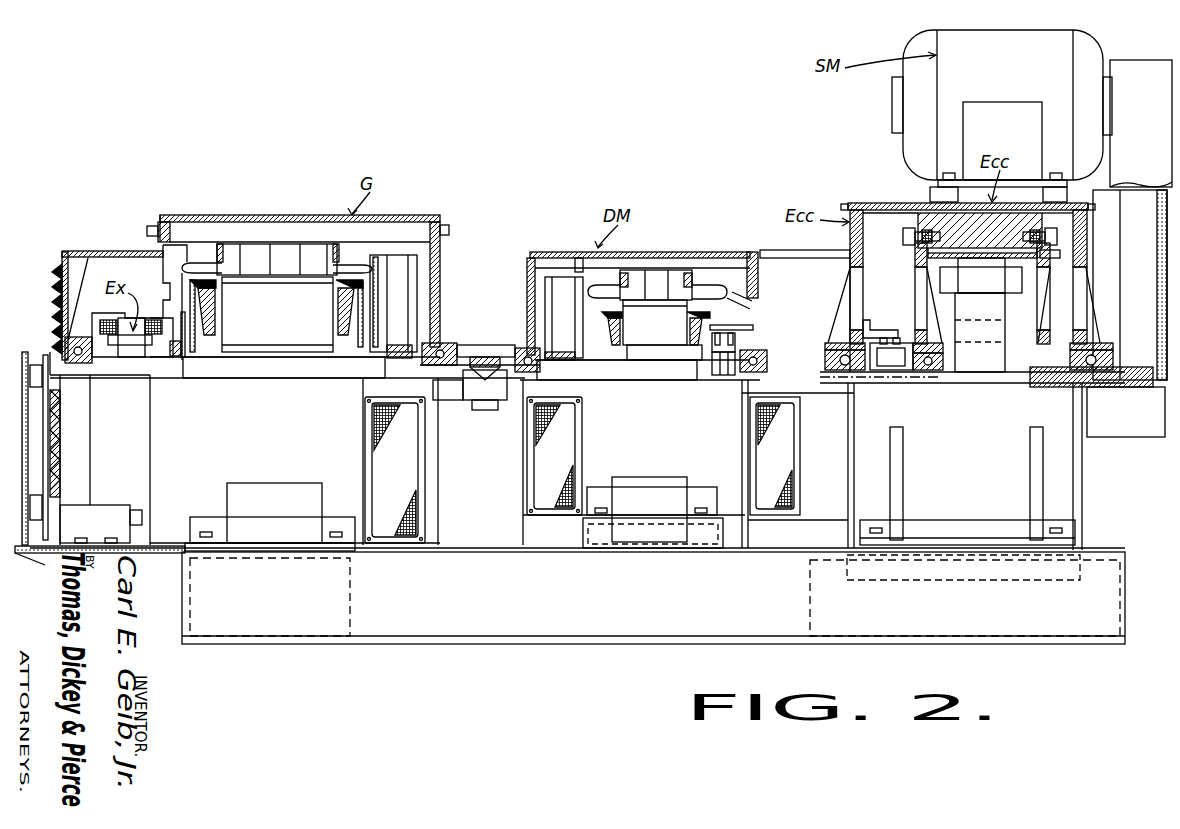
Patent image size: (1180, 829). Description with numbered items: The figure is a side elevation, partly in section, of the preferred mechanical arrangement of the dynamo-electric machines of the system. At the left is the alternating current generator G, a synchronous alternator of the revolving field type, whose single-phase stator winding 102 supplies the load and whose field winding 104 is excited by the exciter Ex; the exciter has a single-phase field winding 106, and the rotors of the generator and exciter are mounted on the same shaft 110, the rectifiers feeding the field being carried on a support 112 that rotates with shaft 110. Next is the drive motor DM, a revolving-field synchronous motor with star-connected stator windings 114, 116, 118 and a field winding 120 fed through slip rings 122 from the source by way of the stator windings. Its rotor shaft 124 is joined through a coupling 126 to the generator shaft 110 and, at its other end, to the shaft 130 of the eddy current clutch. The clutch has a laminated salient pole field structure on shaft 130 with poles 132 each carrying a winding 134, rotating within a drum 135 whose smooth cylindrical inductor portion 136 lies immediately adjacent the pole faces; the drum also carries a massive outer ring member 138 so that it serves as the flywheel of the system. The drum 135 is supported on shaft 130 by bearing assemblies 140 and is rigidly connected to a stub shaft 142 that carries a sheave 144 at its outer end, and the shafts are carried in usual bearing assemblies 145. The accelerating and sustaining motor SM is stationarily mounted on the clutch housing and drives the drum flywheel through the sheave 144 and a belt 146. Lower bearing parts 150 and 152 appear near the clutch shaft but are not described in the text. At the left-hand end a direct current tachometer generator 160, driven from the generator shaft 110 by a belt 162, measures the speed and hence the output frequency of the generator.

The single-phase stator winding 102 is at (188, 268).
The field winding 104 is at (212, 326).
The single-phase field winding 106 is at (112, 300).
The shaft 110 is at (212, 376).
The support 112 is at (195, 318).
The stator winding 114 is at (703, 292).
The stator winding 116 is at (662, 330).
The stator winding 118 is at (656, 328).
The field winding 120 is at (612, 340).
The slip rings 122 is at (725, 377).
The rotor shaft 124 is at (668, 382).
The coupling 126 is at (485, 358).
The shaft 130 is at (1002, 380).
The poles 132 is at (988, 325).
The winding 134 is at (1015, 282).
The drum 135 is at (1060, 256).
The cylindrical inductor portion 136 is at (980, 235).
The outer ring member 138 is at (1000, 215).
The bearing assemblies 140 is at (922, 360).
The stub shaft 142 is at (1062, 380).
The sheave 144 is at (870, 200).
The bearing assemblies 145 is at (65, 347).
The belt 146 is at (1140, 300).
The lower bearing block 150 is at (872, 365).
The bearing retainer 152 is at (883, 365).
The direct current tachometer generator 160 is at (105, 518).
The belt 162 is at (45, 428).